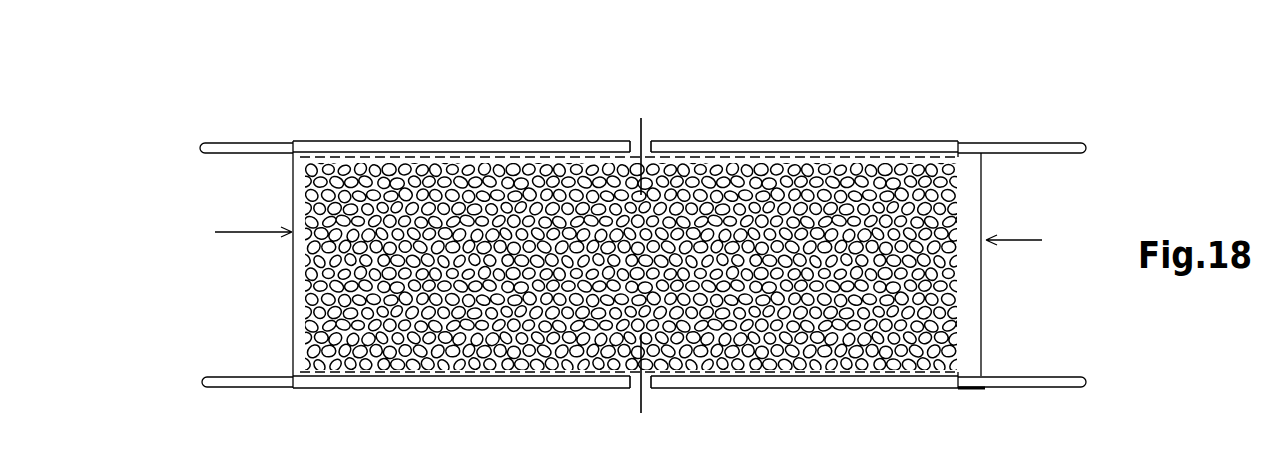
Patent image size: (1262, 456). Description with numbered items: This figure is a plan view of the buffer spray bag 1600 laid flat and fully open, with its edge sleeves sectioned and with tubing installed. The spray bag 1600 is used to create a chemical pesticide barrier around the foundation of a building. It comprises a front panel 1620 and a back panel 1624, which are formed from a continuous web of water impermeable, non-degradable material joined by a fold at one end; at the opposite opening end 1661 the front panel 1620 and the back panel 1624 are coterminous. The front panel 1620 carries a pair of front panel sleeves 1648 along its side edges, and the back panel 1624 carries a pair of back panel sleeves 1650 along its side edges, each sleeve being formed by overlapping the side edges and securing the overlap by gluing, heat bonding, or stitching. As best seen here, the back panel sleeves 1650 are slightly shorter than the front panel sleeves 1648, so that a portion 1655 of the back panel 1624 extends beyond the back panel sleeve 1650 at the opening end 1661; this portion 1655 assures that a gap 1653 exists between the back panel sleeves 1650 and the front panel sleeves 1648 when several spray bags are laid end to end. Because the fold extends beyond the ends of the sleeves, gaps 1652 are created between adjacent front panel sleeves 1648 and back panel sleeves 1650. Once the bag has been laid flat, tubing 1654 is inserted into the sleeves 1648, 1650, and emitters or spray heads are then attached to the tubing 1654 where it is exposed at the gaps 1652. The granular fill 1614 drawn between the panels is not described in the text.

The buffer spray bag 1600 is at (962, 71).
The filter media pebbles 1614 is at (795, 165).
The front panel 1620 is at (297, 307).
The back panel 1624 is at (977, 300).
The front panel sleeves 1648 is at (453, 145).
The back panel sleeves 1650 is at (727, 145).
The gaps 1652 is at (637, 145).
The gap 1653 is at (967, 390).
The tubing 1654 is at (1060, 147).
The portion of the back panel 1655 is at (972, 178).
The opening end 1661 is at (628, 236).